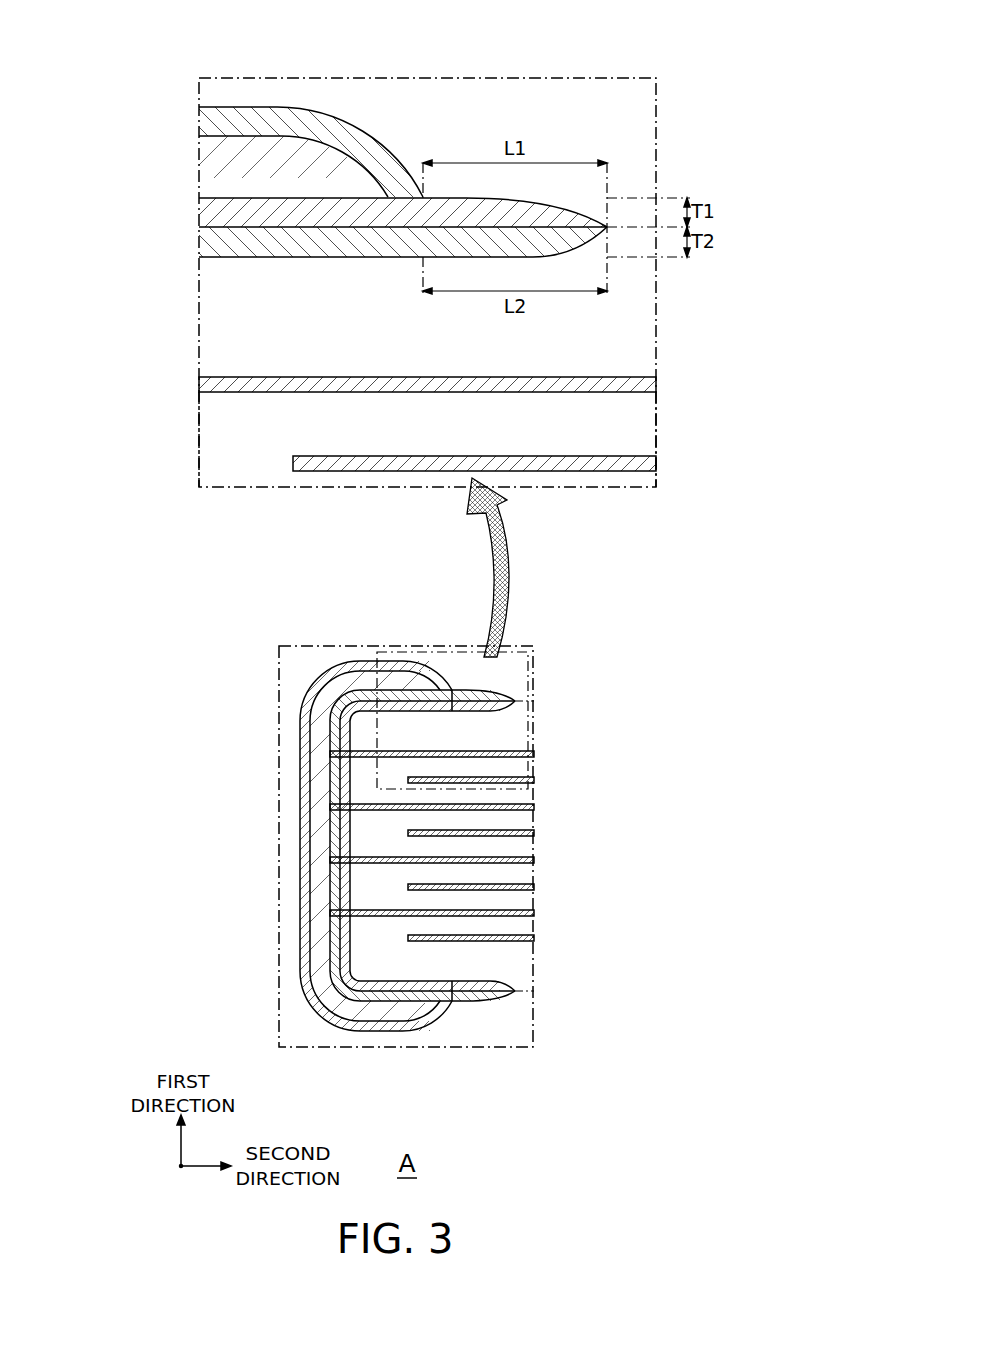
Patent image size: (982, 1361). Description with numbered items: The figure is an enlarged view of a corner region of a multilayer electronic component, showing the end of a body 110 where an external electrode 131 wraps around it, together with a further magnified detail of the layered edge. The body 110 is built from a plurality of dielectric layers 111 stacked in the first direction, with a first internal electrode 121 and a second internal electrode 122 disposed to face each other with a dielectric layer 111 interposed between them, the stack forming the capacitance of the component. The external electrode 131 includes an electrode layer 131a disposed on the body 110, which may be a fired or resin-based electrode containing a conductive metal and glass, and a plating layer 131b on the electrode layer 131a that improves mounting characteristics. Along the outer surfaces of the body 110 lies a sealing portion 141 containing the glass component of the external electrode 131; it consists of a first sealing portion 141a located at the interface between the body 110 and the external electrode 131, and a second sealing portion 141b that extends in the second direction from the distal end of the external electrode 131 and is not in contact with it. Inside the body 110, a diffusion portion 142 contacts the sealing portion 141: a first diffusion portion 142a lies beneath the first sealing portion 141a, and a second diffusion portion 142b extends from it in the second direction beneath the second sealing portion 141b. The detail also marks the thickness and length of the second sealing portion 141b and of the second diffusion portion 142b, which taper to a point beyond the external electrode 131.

The body 110 is at (516, 698).
The dielectric layer 111 is at (656, 428).
The first internal electrode 121 is at (656, 386).
The second internal electrode 122 is at (656, 465).
The external electrode 131 is at (247, 562).
The electrode layer 131a is at (272, 578).
The plating layer 131b is at (212, 122).
The sealing portion 141 is at (373, 564).
The first sealing portion 141a is at (343, 207).
The second sealing portion 141b is at (448, 207).
The diffusion portion 142 is at (336, 599).
The first diffusion portion 142a is at (299, 242).
The second diffusion portion 142b is at (463, 247).